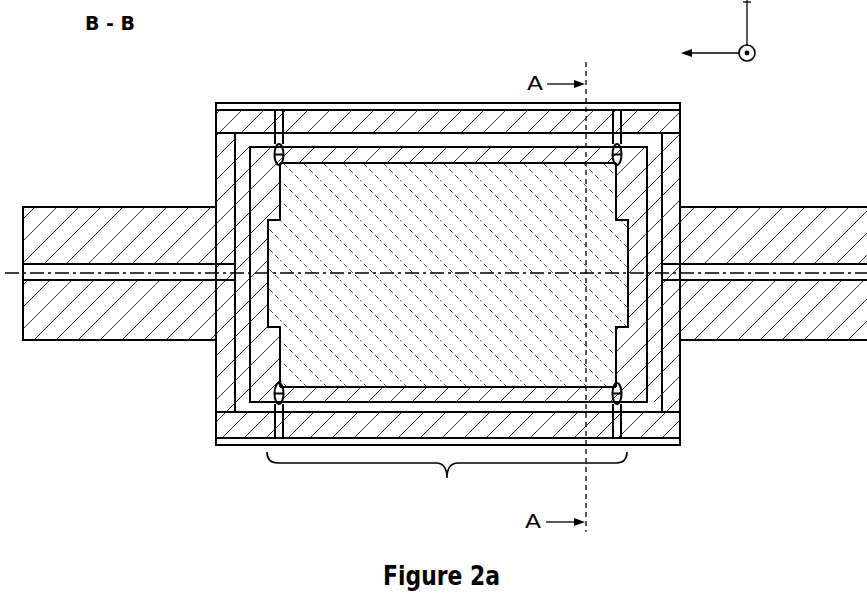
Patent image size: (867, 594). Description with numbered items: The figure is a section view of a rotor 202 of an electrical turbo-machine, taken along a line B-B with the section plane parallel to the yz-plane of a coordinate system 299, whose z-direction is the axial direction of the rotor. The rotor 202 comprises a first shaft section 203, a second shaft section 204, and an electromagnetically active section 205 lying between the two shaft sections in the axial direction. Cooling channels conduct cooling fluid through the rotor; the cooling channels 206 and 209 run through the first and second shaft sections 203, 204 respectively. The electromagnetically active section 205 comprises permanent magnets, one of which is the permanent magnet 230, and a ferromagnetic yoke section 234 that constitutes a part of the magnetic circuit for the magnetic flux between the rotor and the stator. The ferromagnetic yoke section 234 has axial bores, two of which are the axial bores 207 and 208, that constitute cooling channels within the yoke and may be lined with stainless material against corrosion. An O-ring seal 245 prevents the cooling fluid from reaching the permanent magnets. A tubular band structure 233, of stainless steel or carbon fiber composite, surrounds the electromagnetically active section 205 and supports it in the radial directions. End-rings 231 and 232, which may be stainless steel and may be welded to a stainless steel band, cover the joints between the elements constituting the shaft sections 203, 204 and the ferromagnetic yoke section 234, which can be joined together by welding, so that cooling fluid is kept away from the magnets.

The rotor 202 is at (176, 157).
The first shaft section 203 is at (119, 251).
The second shaft section 204 is at (781, 245).
The electromagnetically active section 205 is at (447, 482).
The cooling channel 206 is at (97, 283).
The axial bore 207 is at (320, 165).
The axial bore 208 is at (448, 386).
The cooling channel 209 is at (740, 282).
The permanent magnet 230 is at (365, 117).
The end-ring 231 is at (214, 119).
The end-ring 232 is at (681, 422).
The tubular band structure 233 is at (497, 103).
The ferromagnetic yoke section 234 is at (469, 241).
The O-ring seal 245 is at (622, 156).
The coordinate system 299 is at (731, 31).